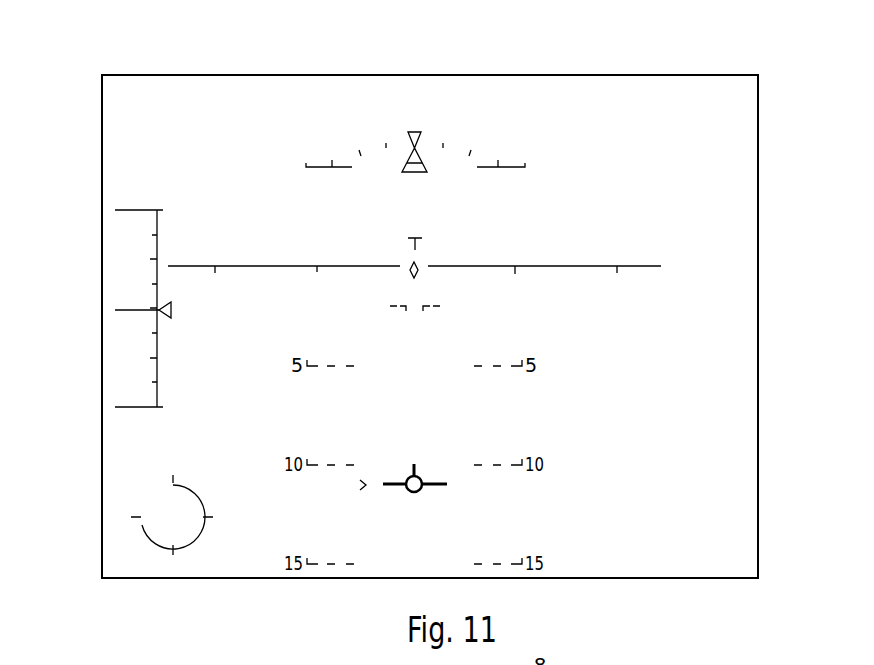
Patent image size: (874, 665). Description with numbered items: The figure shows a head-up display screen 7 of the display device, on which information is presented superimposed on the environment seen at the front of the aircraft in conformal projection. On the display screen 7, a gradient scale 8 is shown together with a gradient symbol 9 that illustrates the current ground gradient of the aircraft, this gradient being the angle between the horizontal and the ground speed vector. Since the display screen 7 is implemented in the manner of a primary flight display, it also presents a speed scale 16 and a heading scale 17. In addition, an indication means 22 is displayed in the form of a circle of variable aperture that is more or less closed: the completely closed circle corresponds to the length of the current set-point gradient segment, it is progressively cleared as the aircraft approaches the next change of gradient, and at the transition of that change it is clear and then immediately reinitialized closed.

The display screen 7 is at (663, 580).
The gradient scale 8 is at (309, 144).
The gradient symbol 9 is at (420, 490).
The speed scale 16 is at (128, 195).
The heading scale 17 is at (682, 262).
The indication means 22 is at (136, 495).